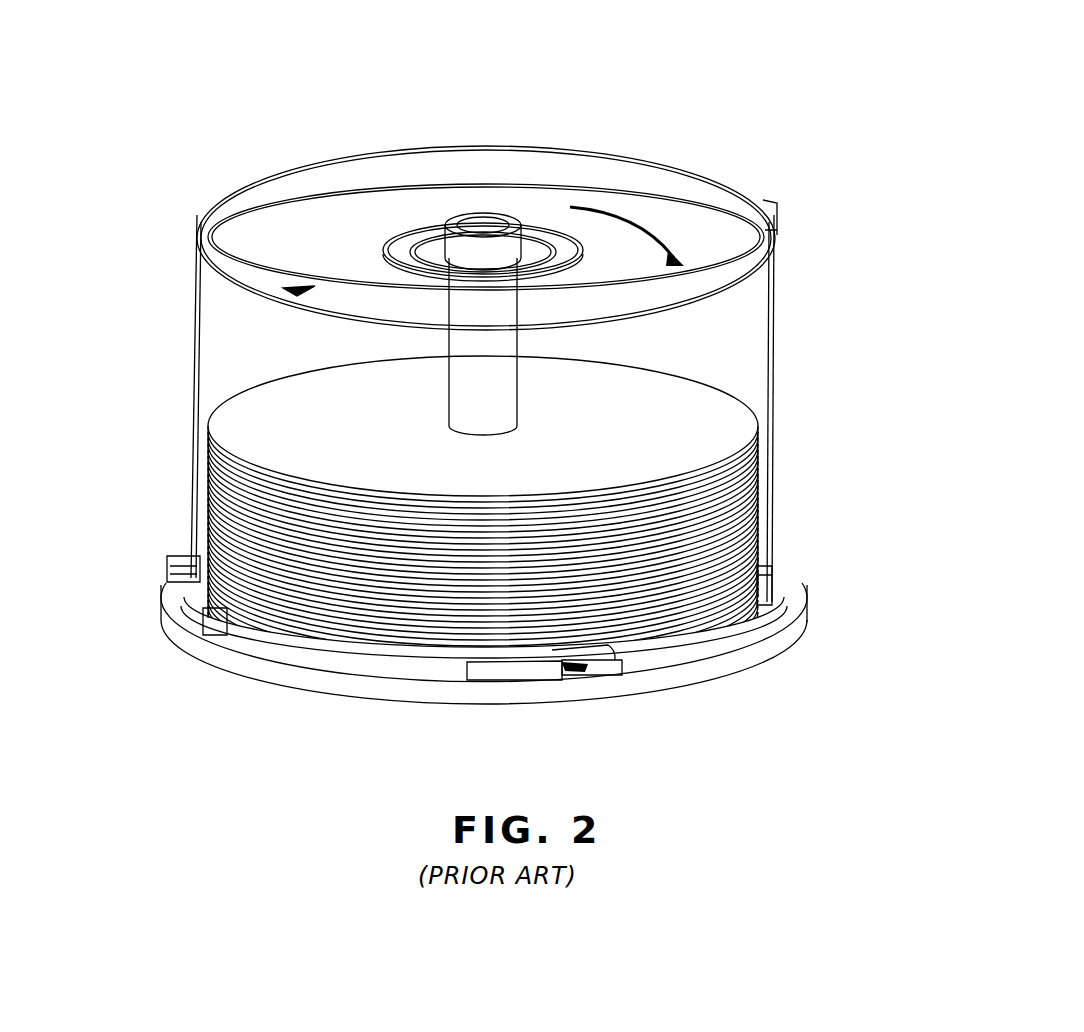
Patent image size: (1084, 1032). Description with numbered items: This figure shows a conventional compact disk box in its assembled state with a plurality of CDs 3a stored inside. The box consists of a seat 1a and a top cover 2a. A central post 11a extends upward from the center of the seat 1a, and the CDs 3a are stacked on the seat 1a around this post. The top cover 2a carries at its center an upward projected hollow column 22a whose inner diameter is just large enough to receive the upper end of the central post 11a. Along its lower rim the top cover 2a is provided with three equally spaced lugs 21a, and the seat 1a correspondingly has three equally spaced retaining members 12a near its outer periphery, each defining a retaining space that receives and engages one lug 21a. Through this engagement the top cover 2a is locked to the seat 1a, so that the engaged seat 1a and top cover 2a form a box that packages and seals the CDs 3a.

The seat 1a is at (752, 635).
The top cover 2a is at (196, 369).
The CDs 3a is at (722, 426).
The central post 11a is at (490, 355).
The retaining member 12a is at (492, 675).
The lug 21a is at (598, 667).
The hollow column 22a is at (486, 224).